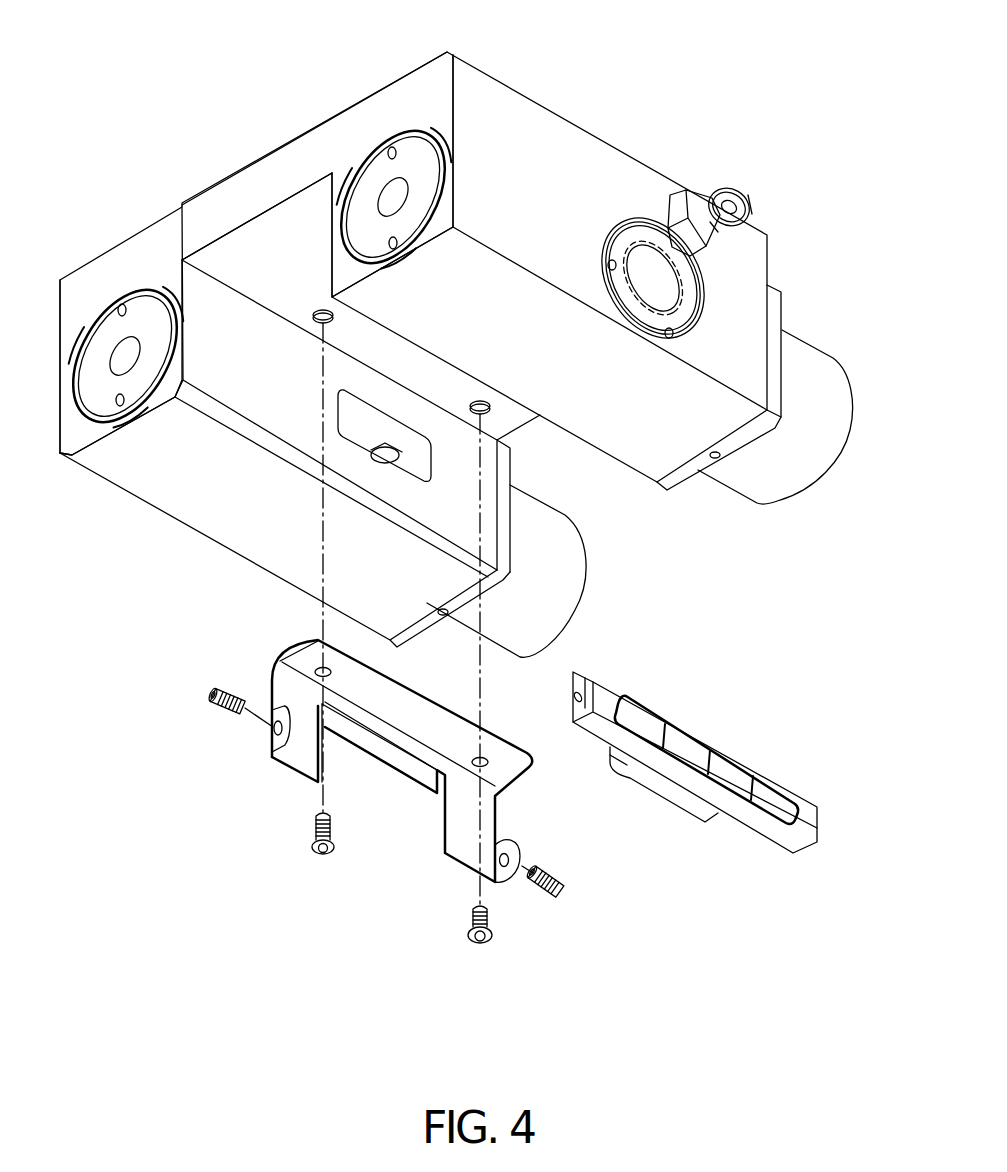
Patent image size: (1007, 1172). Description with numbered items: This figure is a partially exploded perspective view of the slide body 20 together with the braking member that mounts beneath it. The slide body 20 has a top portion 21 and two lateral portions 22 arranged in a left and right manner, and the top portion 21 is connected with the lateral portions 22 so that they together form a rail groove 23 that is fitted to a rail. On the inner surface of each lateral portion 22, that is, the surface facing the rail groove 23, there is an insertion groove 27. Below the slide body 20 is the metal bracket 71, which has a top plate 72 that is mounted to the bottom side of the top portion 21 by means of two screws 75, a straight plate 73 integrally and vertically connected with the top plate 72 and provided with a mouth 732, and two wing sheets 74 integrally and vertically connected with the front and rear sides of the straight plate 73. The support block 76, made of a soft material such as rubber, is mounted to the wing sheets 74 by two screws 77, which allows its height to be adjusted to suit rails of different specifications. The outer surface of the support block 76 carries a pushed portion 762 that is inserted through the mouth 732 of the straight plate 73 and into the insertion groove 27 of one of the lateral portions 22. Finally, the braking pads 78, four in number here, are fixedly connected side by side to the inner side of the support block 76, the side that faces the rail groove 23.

The slide body 20 is at (547, 93).
The top portion 21 is at (297, 157).
The lateral portions 22 is at (142, 478).
The rail groove 23 is at (620, 503).
The insertion groove 27 is at (347, 412).
The metal bracket 71 is at (365, 790).
The top plate 72 is at (313, 653).
The straight plate 73 is at (297, 757).
The mouth 732 is at (397, 798).
The wing sheets 74 is at (277, 742).
The screws 75 is at (310, 832).
The support block 76 is at (709, 778).
The pushed portion 762 is at (663, 790).
The screws 77 is at (212, 708).
The braking pads 78 is at (768, 790).